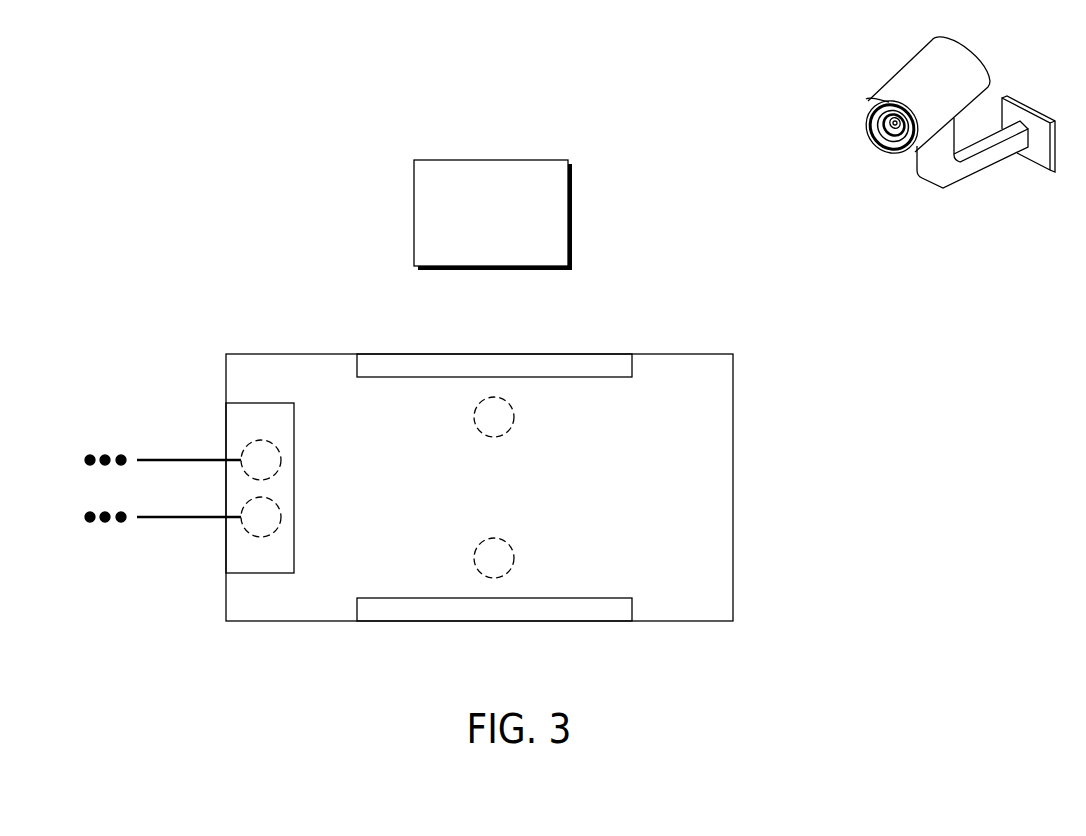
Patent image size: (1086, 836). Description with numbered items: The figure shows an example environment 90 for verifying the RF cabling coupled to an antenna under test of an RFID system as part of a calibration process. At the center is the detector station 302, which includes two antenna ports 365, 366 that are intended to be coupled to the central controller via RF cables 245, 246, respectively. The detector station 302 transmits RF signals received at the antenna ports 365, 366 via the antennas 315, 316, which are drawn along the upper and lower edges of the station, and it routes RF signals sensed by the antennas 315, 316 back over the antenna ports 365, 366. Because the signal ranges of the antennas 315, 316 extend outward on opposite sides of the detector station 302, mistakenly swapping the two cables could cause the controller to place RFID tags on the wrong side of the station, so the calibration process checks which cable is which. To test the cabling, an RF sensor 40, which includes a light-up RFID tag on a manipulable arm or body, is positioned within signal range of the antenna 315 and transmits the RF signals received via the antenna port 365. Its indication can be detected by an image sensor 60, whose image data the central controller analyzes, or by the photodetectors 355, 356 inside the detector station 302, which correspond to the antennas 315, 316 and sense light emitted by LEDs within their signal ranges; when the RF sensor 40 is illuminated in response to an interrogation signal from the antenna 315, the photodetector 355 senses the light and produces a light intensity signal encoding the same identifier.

The image sensor 60 is at (896, 73).
The RF sensor 40 is at (414, 213).
The environment 90 is at (645, 118).
The detector station 302 is at (685, 354).
The antenna 315 is at (493, 354).
The antenna 316 is at (423, 598).
The photodetector 355 is at (514, 415).
The photodetector 356 is at (514, 557).
The antenna port 365 is at (281, 459).
The antenna port 366 is at (281, 516).
The RF cable 245 is at (175, 459).
The RF cable 246 is at (177, 518).